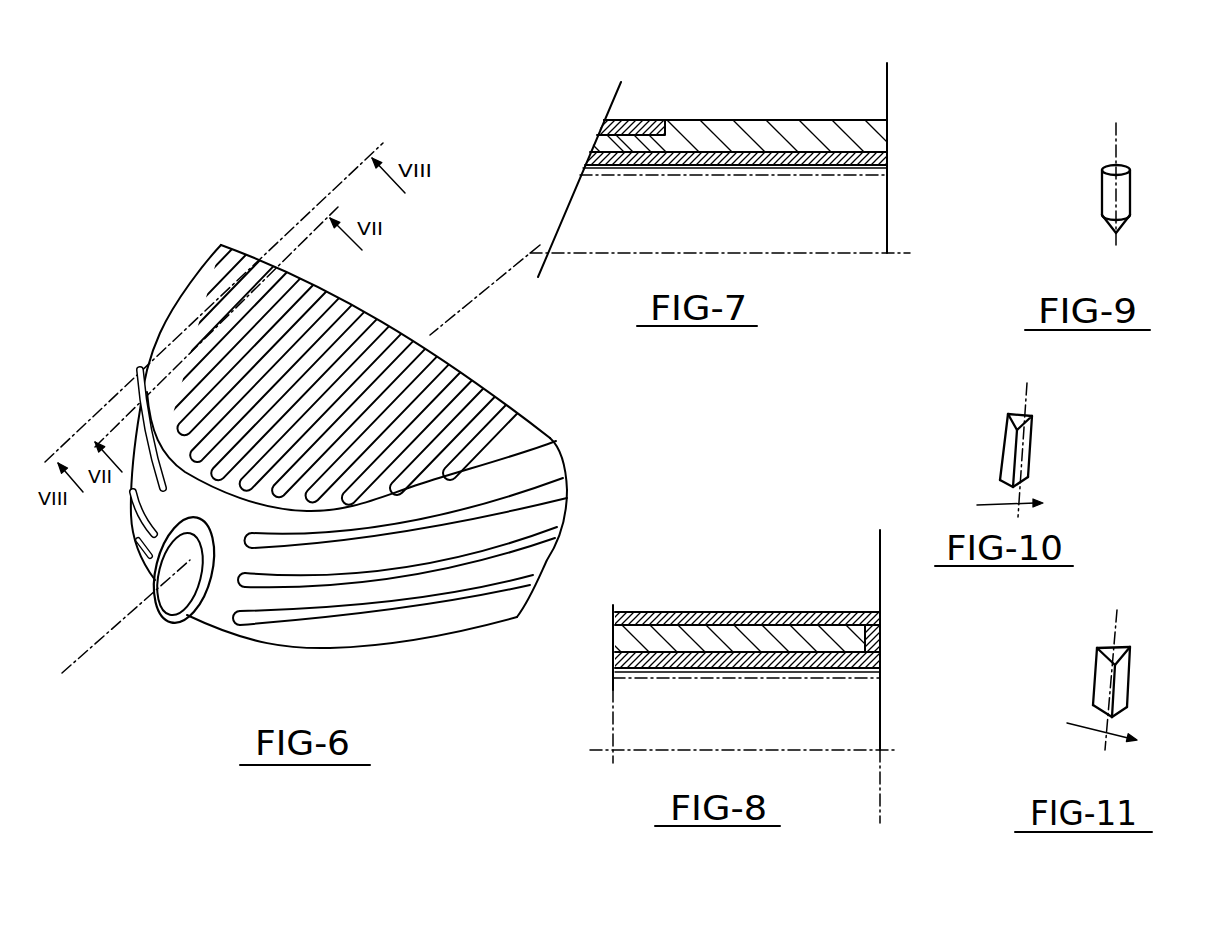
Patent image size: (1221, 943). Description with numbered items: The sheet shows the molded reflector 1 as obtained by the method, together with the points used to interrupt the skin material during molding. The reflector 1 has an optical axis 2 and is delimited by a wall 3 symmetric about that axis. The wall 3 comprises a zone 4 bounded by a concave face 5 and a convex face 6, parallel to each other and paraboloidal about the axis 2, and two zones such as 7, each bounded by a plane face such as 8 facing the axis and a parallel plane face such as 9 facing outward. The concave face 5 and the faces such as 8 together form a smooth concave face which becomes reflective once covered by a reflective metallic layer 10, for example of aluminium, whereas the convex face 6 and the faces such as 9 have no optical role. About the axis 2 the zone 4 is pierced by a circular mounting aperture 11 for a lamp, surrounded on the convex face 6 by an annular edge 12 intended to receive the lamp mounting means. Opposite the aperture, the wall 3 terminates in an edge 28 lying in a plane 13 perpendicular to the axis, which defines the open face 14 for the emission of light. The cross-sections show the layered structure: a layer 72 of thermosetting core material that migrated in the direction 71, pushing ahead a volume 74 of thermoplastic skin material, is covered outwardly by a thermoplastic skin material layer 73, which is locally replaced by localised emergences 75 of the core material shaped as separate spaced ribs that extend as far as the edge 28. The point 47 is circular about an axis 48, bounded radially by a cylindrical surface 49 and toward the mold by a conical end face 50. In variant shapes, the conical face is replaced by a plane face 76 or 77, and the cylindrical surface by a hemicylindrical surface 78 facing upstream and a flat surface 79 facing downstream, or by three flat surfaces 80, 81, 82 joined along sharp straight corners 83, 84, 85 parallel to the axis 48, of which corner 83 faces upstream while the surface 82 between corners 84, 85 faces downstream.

In FIG. 6, the reflector 1 is at (202, 646).
In FIG. 7, the reflector 1 is at (723, 102).
In FIG. 8, the reflector 1 is at (675, 588).
In FIG. 6, the optical axis 2 is at (83, 657).
In FIG. 6, the wall 3 is at (542, 422).
In FIG. 7, the wall 3 is at (811, 139).
In FIG. 8, the wall 3 is at (880, 702).
In FIG. 6, the zone 4 is at (552, 502).
In FIG. 7, the zone 4 is at (793, 243).
In FIG. 8, the zone 4 is at (797, 740).
In FIG. 7, the concave face 5 is at (873, 212).
In FIG. 8, the concave face 5 is at (875, 733).
In FIG. 6, the convex face 6 is at (538, 553).
In FIG. 6, the zone 7 is at (468, 386).
In FIG. 7, the zone 7 is at (853, 133).
In FIG. 8, the zone 7 is at (820, 638).
In FIG. 7, the plane face 8 is at (750, 166).
In FIG. 8, the plane face 8 is at (753, 671).
In FIG. 6, the plane face 9 is at (485, 402).
In FIG. 7, the plane face 9 is at (790, 120).
In FIG. 8, the plane face 9 is at (755, 612).
In FIG. 7, the reflective metallic layer 10 is at (663, 174).
In FIG. 8, the reflective metallic layer 10 is at (683, 678).
In FIG. 6, the mounting aperture 11 is at (176, 598).
In FIG. 6, the annular edge 12 is at (153, 583).
In FIG. 7, the plane 13 is at (889, 97).
In FIG. 8, the plane 13 is at (882, 603).
In FIG. 7, the open face 14 is at (889, 180).
In FIG. 8, the open face 14 is at (882, 713).
In FIG. 6, the edge 28 is at (561, 456).
In FIG. 7, the edge 28 is at (888, 137).
In FIG. 8, the edge 28 is at (882, 640).
In FIG. 9, the point 47 is at (1128, 210).
In FIG. 9, the axis 48 is at (1122, 153).
In FIG. 10, the axis 48 is at (1030, 392).
In FIG. 11, the axis 48 is at (1128, 614).
In FIG. 9, the surface 49 is at (1125, 184).
In FIG. 9, the end face 50 is at (1120, 222).
In FIG. 10, the direction of migration 71 is at (982, 503).
In FIG. 11, the direction of migration 71 is at (1092, 733).
In FIG. 7, the layer of thermosetting core material 72 is at (623, 163).
In FIG. 8, the layer of thermosetting core material 72 is at (633, 640).
In FIG. 6, the thermoplastic skin material layer 73 is at (355, 327).
In FIG. 7, the thermoplastic skin material layer 73 is at (640, 120).
In FIG. 8, the thermoplastic skin material layer 73 is at (705, 652).
In FIG. 8, the volume of thermoplastic skin material 74 is at (882, 622).
In FIG. 6, the localised emergences 75 is at (295, 268).
In FIG. 7, the localised emergences 75 is at (755, 130).
In FIG. 10, the plane face 76 is at (1002, 485).
In FIG. 11, the plane face 77 is at (1102, 715).
In FIG. 10, the hemicylindrical surface 78 is at (1003, 450).
In FIG. 10, the flat surface 79 is at (1032, 450).
In FIG. 11, the flat surface 80 is at (1102, 670).
In FIG. 11, the flat surface 81 is at (1115, 653).
In FIG. 11, the flat surface 82 is at (1123, 680).
In FIG. 11, the sharp straight corner 83 is at (1097, 648).
In FIG. 11, the sharp straight corner 84 is at (1128, 670).
In FIG. 11, the sharp straight corner 85 is at (1113, 677).